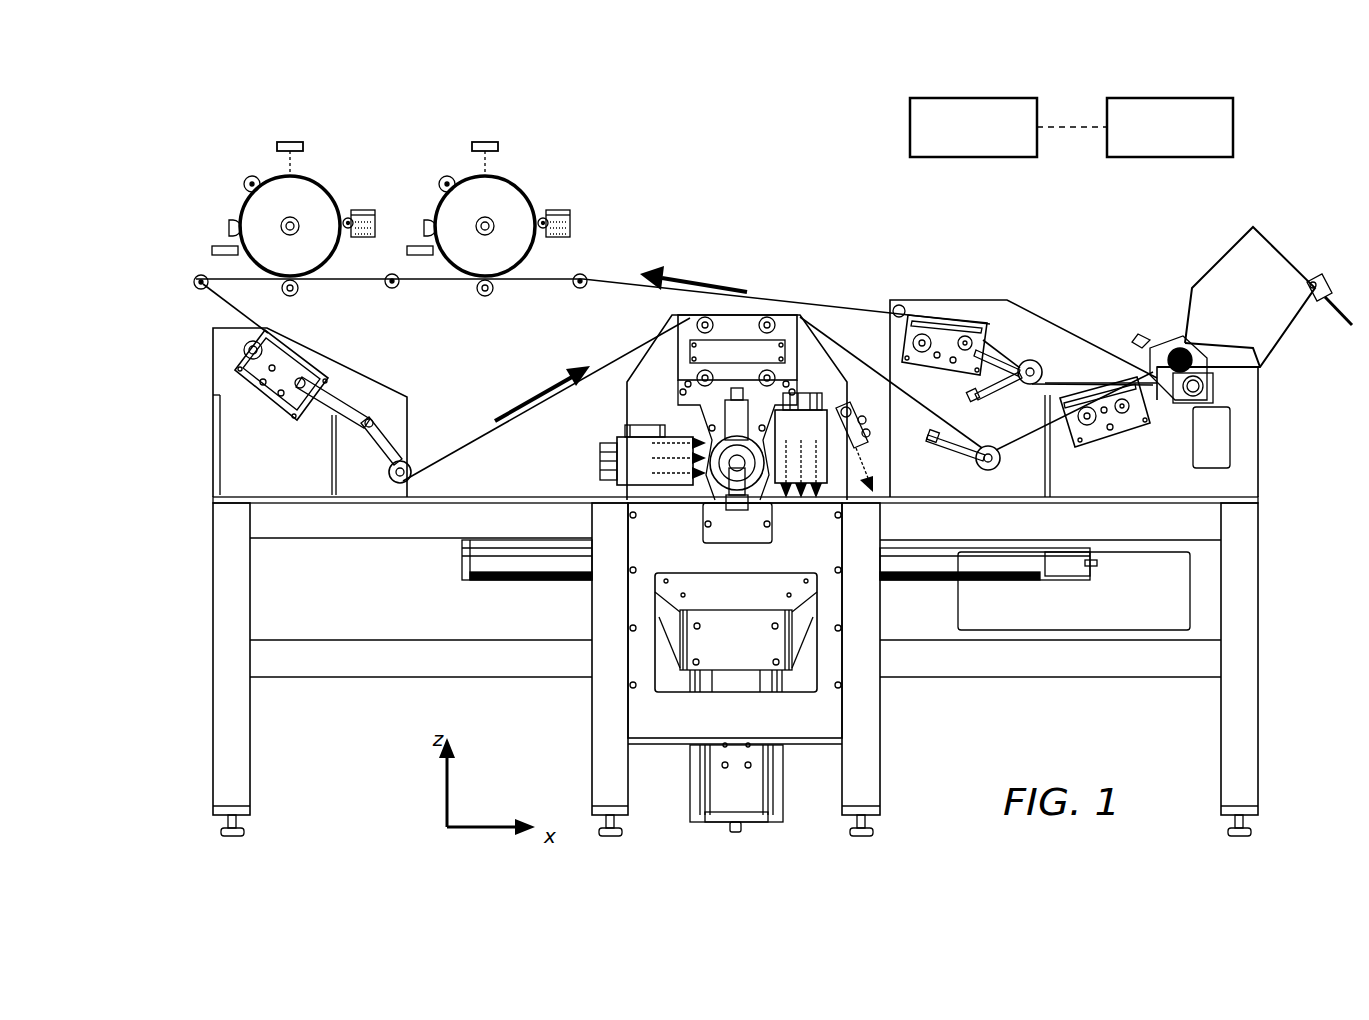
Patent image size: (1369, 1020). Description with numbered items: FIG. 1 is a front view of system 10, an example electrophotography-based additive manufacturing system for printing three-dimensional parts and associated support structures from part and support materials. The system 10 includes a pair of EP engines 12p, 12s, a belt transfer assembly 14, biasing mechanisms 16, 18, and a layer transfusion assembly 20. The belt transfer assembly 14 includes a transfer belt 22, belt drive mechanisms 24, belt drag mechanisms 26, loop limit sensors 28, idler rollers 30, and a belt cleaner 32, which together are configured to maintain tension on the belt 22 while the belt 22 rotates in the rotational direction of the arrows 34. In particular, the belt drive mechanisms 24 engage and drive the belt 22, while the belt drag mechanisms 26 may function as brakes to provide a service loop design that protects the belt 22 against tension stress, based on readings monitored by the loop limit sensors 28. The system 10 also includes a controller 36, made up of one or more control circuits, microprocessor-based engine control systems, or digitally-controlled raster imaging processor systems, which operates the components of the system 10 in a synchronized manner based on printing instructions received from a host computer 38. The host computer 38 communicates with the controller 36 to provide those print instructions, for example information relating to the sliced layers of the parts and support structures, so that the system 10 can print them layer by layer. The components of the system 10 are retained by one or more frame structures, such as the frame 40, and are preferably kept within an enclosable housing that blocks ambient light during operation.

The system 10 is at (228, 106).
The EP engine 12p is at (325, 156).
The EP engine 12s is at (543, 180).
The belt transfer assembly 14 is at (256, 427).
The biasing mechanism 16 is at (484, 296).
The biasing mechanism 18 is at (302, 292).
The layer transfusion assembly 20 is at (608, 210).
The transfer belt 22 is at (498, 444).
The belt drive mechanism 24 is at (303, 362).
The belt drag mechanism 26 is at (685, 333).
The loop limit sensor 28 is at (393, 483).
The idler roller 30 is at (198, 290).
The belt cleaner 32 is at (1230, 257).
The arrows 34 is at (547, 385).
The controller 36 is at (1003, 157).
The host computer 38 is at (1210, 157).
The frame 40 is at (425, 665).